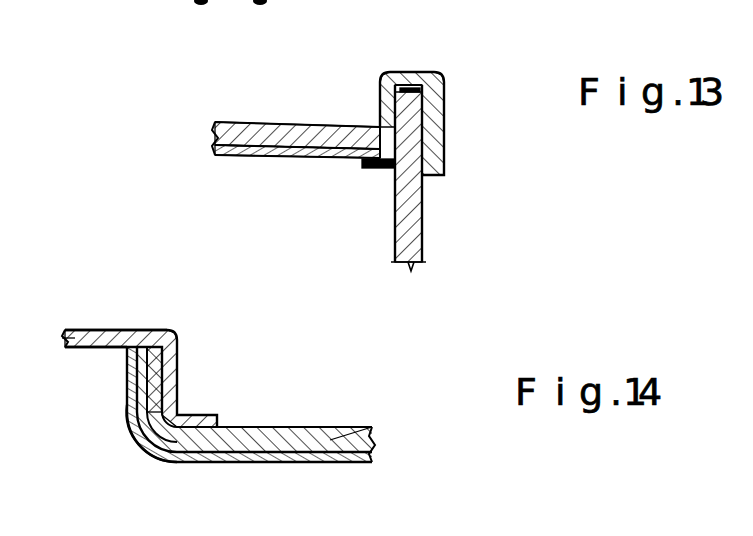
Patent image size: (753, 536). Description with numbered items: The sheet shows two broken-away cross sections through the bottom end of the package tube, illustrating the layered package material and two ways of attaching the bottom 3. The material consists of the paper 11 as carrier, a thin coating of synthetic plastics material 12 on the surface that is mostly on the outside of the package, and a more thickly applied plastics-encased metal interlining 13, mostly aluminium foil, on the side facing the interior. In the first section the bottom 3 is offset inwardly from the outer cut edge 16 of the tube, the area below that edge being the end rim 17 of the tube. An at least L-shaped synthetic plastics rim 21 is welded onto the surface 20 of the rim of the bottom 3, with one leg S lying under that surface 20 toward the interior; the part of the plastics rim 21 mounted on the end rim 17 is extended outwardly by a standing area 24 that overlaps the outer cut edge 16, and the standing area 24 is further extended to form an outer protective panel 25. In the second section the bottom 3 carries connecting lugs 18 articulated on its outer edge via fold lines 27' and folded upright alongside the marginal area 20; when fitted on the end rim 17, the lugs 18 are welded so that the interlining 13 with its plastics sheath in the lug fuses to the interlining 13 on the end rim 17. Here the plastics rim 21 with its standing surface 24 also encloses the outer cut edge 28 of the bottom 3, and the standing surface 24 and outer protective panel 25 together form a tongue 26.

In FIG. 13, the bottom 3 is at (262, 136).
In FIG. 14, the bottom 3 is at (240, 434).
In FIG. 13, the paper 11 is at (212, 134).
In FIG. 14, the paper 11 is at (147, 413).
In FIG. 14, the synthetic plastics material 12 is at (365, 426).
In FIG. 13, the plastics-encased metal interlining 13 is at (398, 225).
In FIG. 14, the plastics-encased metal interlining 13 is at (280, 465).
In FIG. 13, the outer cut edge of the tube 16 is at (454, 90).
In FIG. 13, the end rim of the tube 17 is at (414, 122).
In FIG. 14, the connecting lugs 18 is at (152, 333).
In FIG. 13, the surface of the rim of the bottom 20 is at (331, 159).
In FIG. 14, the synthetic plastics rim 21 is at (141, 334).
In FIG. 13, the standing area 24 is at (407, 72).
In FIG. 13, the outer protective panel 25 is at (434, 153).
In FIG. 14, the tongue 26 is at (85, 328).
In FIG. 14, the fold lines 27' is at (148, 465).
In FIG. 14, the outer cut edge of the bottom 28 is at (143, 377).
In FIG. 13, the leg of the plastics rim S is at (372, 169).